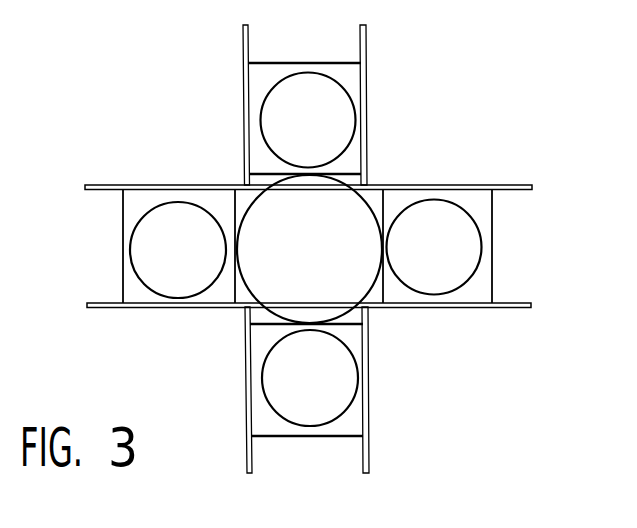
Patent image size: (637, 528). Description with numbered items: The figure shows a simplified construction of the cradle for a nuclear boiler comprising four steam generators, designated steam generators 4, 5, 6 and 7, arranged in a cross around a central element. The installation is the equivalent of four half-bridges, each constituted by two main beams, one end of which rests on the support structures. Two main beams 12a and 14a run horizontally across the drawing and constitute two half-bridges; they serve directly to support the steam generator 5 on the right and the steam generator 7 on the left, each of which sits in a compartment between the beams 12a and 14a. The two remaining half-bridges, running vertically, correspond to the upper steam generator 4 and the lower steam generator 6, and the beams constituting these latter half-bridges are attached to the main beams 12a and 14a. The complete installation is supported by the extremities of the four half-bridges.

The steam generator 4 is at (335, 93).
The steam generator 5 is at (468, 230).
The steam generator 6 is at (335, 380).
The steam generator 7 is at (193, 218).
The main beam 12a is at (418, 136).
The main beam 14a is at (153, 307).